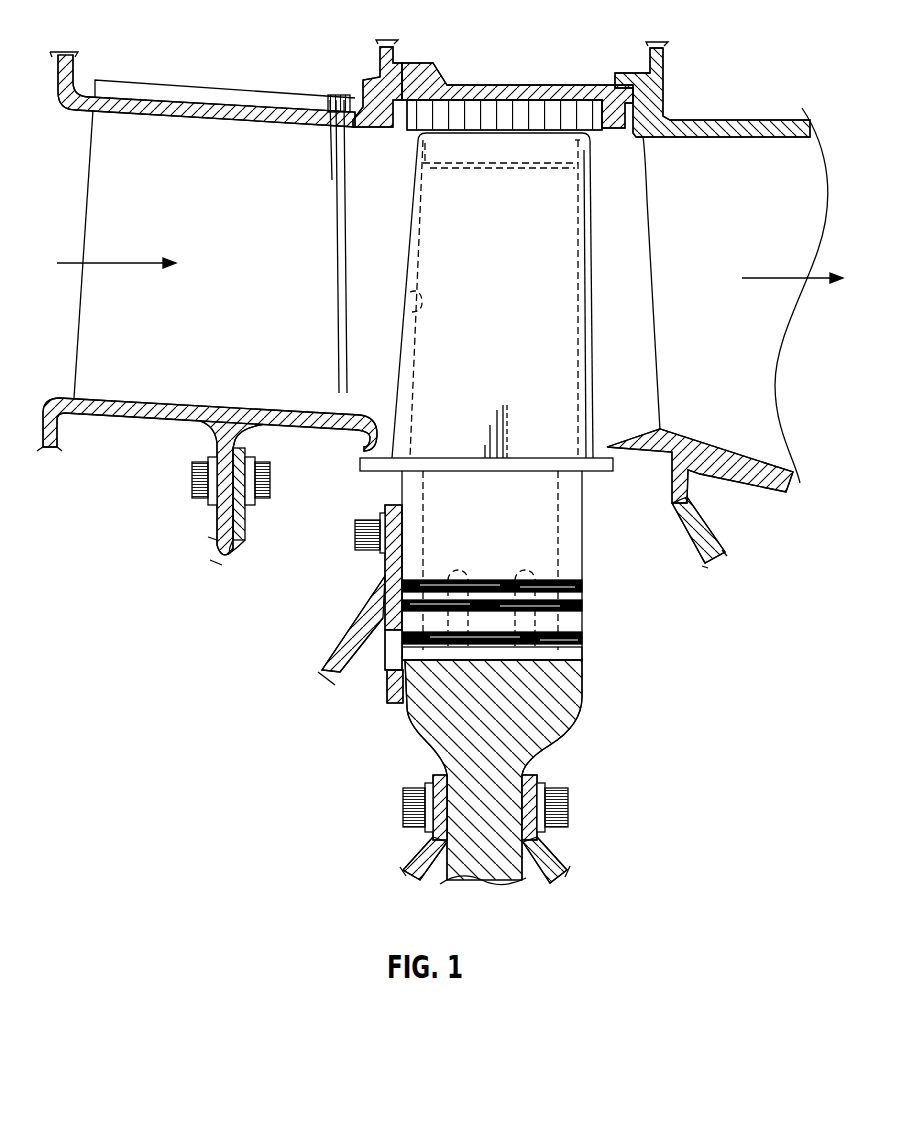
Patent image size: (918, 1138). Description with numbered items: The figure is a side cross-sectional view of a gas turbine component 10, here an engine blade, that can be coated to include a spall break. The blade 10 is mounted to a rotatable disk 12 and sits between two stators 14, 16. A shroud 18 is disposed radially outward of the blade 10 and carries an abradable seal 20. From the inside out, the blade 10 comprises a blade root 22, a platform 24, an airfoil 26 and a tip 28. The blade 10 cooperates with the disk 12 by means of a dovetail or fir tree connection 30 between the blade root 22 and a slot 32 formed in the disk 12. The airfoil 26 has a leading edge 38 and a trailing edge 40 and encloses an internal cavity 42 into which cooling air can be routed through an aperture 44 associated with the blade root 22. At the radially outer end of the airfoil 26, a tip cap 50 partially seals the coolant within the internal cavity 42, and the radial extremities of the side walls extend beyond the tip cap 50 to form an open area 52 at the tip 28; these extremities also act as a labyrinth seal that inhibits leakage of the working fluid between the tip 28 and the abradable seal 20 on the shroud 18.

The gas turbine component 10 is at (596, 252).
The rotatable disk 12 is at (583, 688).
The stator 14 is at (231, 352).
The stator 16 is at (736, 390).
The shroud 18 is at (460, 88).
The abradable seal 20 is at (505, 110).
The blade root 22 is at (582, 556).
The platform 24 is at (471, 457).
The airfoil 26 is at (510, 342).
The tip 28 is at (566, 140).
The dovetail or fir tree connection 30 is at (592, 613).
The slot 32 is at (583, 643).
The leading edge 38 is at (411, 238).
The trailing edge 40 is at (597, 358).
The internal cavity 42 is at (410, 300).
The aperture 44 is at (378, 657).
The tip cap 50 is at (474, 170).
The open area 52 is at (418, 162).